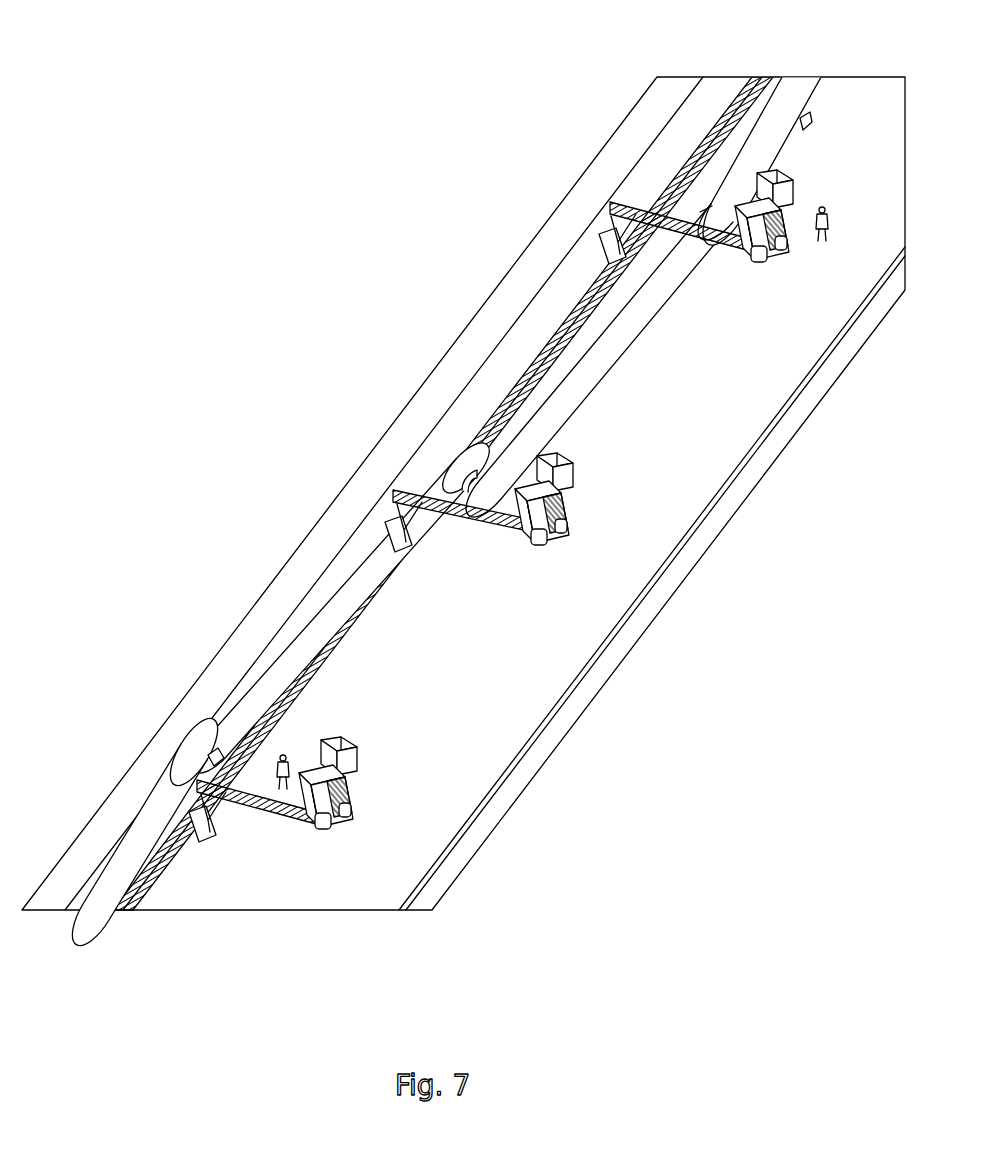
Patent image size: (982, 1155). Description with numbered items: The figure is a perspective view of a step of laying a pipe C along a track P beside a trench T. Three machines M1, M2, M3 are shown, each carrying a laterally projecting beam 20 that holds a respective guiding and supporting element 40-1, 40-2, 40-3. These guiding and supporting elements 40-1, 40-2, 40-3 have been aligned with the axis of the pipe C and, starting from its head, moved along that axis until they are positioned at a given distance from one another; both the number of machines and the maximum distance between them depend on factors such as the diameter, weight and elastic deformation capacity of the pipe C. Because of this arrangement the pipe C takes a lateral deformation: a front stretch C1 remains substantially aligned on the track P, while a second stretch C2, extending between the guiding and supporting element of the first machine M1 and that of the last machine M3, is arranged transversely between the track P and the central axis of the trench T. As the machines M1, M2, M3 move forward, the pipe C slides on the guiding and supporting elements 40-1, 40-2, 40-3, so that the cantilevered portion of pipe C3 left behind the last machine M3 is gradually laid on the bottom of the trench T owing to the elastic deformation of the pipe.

The track P is at (536, 686).
The trench T is at (666, 165).
The pipe C is at (332, 584).
The front stretch C1 is at (785, 113).
The second stretch C2 is at (583, 342).
The cantilevered portion of pipe C3 is at (150, 822).
The beam 20 is at (607, 207).
The guiding and supporting element 40-1 is at (722, 242).
The guiding and supporting element 40-2 is at (446, 468).
The guiding and supporting element 40-3 is at (185, 745).
The machine M1 is at (783, 253).
The machine M2 is at (572, 527).
The machine M3 is at (354, 815).